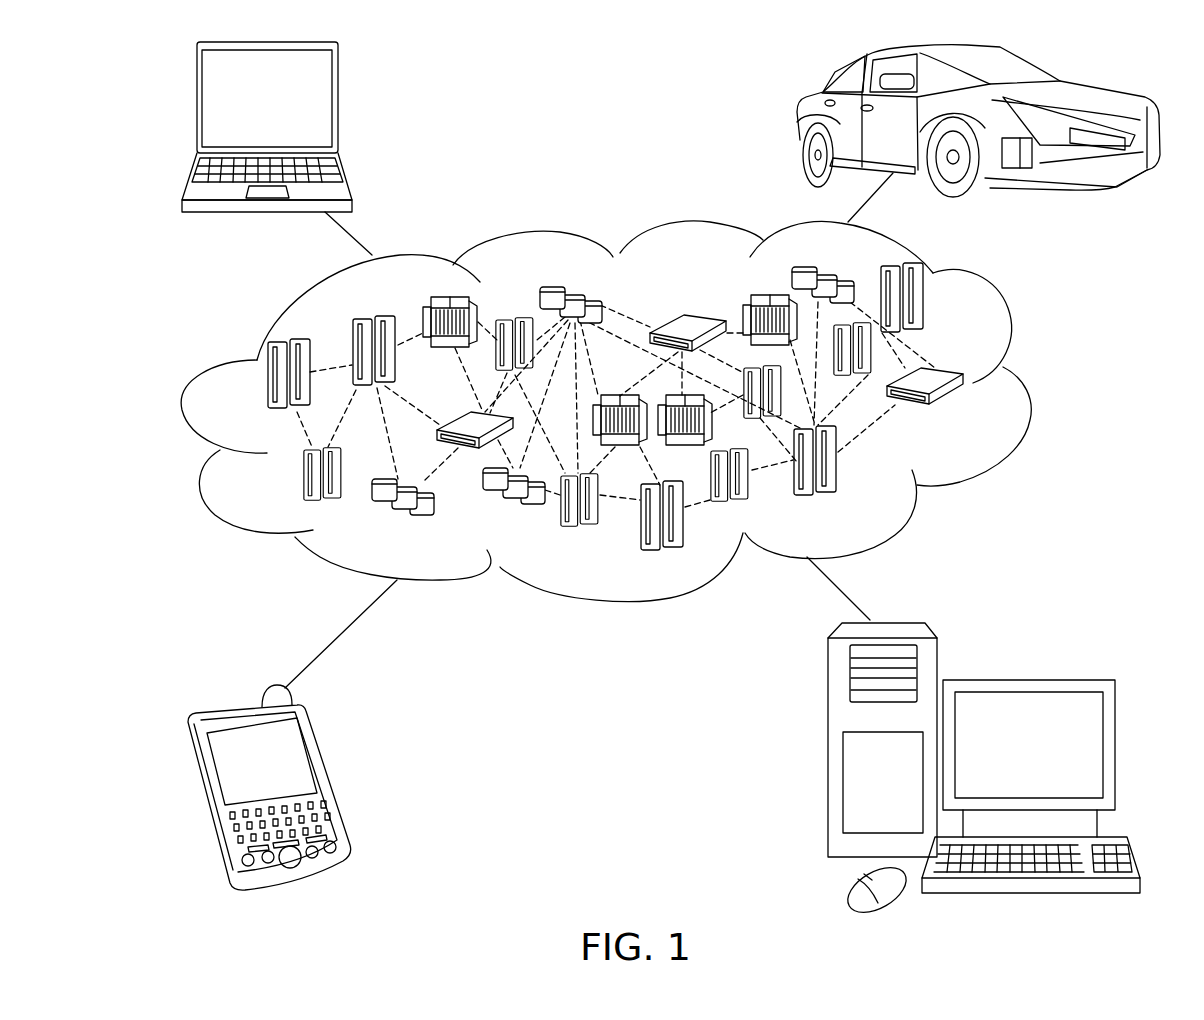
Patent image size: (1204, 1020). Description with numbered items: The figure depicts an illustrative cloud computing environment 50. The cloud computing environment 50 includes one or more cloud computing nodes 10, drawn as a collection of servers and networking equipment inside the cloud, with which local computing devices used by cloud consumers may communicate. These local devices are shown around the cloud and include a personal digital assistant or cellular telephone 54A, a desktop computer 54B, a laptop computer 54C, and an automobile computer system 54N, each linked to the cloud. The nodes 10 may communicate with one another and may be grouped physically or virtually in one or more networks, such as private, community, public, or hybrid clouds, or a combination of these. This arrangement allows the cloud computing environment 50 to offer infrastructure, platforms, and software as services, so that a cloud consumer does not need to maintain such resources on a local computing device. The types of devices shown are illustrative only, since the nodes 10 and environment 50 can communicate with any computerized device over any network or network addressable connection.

The cloud computing nodes 10 is at (983, 418).
The cloud computing environment 50 is at (1028, 386).
The personal digital assistant (PDA) or cellular telephone 54A is at (328, 780).
The desktop computer 54B is at (1030, 680).
The laptop computer 54C is at (338, 105).
The automobile computer system 54N is at (800, 125).